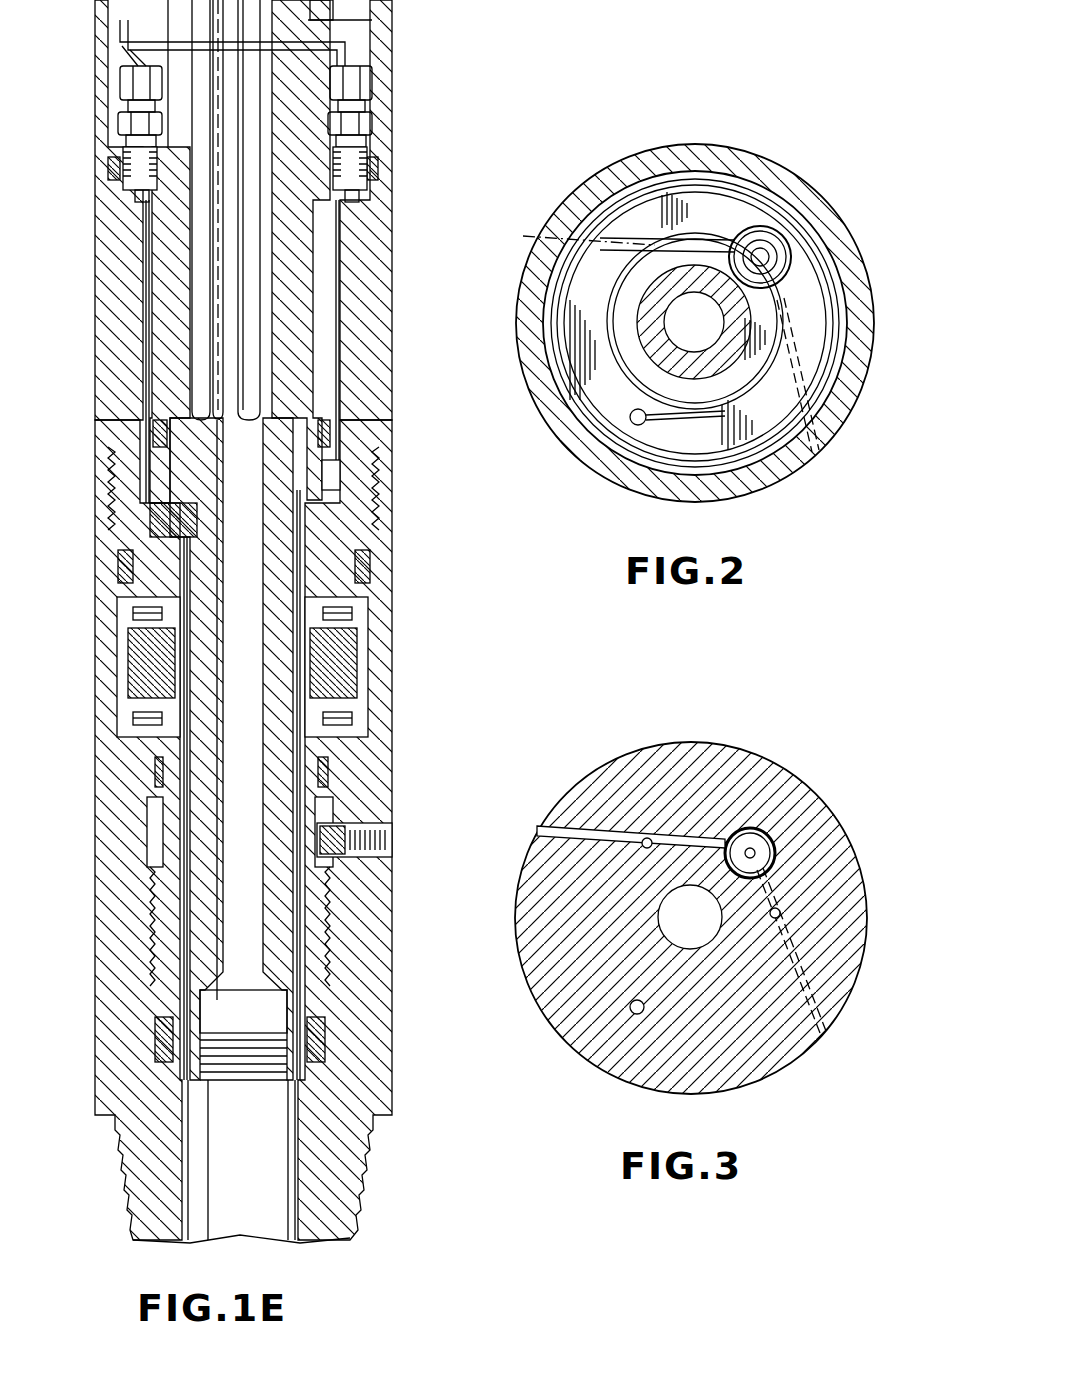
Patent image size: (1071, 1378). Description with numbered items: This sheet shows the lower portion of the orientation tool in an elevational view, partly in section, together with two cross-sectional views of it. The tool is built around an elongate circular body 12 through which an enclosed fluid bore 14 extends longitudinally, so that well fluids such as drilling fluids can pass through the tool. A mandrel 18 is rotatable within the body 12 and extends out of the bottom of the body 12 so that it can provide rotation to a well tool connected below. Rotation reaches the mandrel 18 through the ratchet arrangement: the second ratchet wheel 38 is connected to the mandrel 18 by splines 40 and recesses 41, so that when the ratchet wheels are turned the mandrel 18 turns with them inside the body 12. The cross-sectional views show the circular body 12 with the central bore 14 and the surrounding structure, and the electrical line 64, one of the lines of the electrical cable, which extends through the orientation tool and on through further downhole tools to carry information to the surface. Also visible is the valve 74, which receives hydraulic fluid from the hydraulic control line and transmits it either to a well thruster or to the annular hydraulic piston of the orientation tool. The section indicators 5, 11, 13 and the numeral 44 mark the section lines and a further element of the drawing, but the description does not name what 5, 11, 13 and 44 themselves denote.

In FIG. 2, the section line 5- 5 is at (523, 236).
In FIG. 1E, the section line 11- 11 is at (87, 254).
In FIG. 1E, the elongate circular body 12 is at (87, 373).
In FIG. 2, the elongate circular body 12 is at (862, 373).
In FIG. 3, the elongate circular body 12 is at (830, 830).
In FIG. 1E, the section line 13- 13 is at (87, 517).
In FIG. 1E, the fluid bore 14 is at (87, 658).
In FIG. 2, the fluid bore 14 is at (712, 322).
In FIG. 3, the fluid bore 14 is at (680, 930).
In FIG. 1E, the mandrel 18 is at (327, 797).
In FIG. 1E, the second ratchet wheel 38 is at (372, 14).
In FIG. 1E, the splines 40 is at (282, 345).
In FIG. 1E, the recesses 41 is at (293, 315).
In FIG. 1E, the conductor wires 44 is at (180, 748).
In FIG. 2, the electrical line 64 is at (662, 425).
In FIG. 3, the valve 74 is at (750, 828).